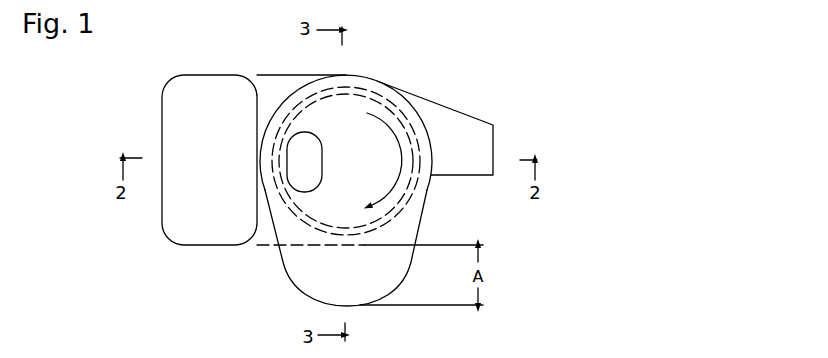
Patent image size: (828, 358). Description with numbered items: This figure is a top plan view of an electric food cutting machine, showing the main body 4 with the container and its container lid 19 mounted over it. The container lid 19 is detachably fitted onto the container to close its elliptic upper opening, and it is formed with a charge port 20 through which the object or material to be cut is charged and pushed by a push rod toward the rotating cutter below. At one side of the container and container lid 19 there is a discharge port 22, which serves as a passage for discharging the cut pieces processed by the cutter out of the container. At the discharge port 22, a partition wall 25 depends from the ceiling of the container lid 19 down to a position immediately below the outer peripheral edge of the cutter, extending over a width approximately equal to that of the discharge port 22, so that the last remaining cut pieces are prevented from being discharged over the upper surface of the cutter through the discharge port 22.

The main body 4 is at (262, 240).
The container lid 19 is at (367, 99).
The charge port 20 is at (302, 140).
The discharge port 22 is at (495, 135).
The partition wall 25 is at (410, 104).